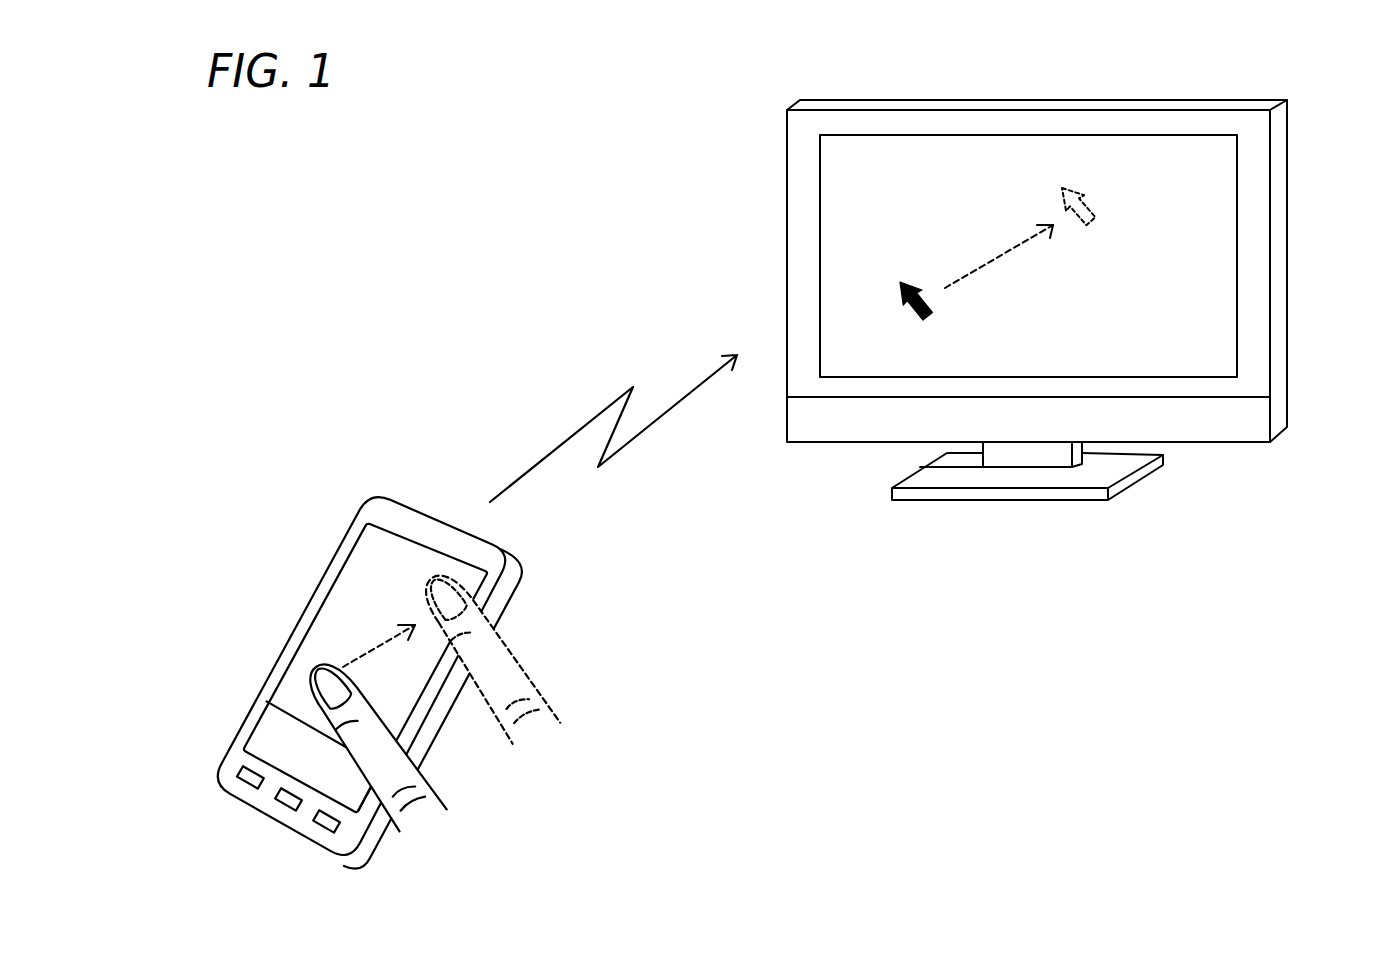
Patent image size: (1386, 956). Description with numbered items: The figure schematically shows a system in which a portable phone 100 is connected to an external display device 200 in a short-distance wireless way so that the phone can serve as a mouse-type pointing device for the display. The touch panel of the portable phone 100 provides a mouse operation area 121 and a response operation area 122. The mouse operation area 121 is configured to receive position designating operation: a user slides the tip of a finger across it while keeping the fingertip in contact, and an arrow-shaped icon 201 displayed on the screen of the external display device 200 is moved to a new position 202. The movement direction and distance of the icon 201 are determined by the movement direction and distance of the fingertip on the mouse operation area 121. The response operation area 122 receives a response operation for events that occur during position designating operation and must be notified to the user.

The portable phone 100 is at (515, 583).
The mouse operation area 121 is at (367, 613).
The response operation area 122 is at (292, 740).
The external display device 200 is at (1287, 408).
The icon 201 is at (932, 318).
The position 202 is at (1090, 222).